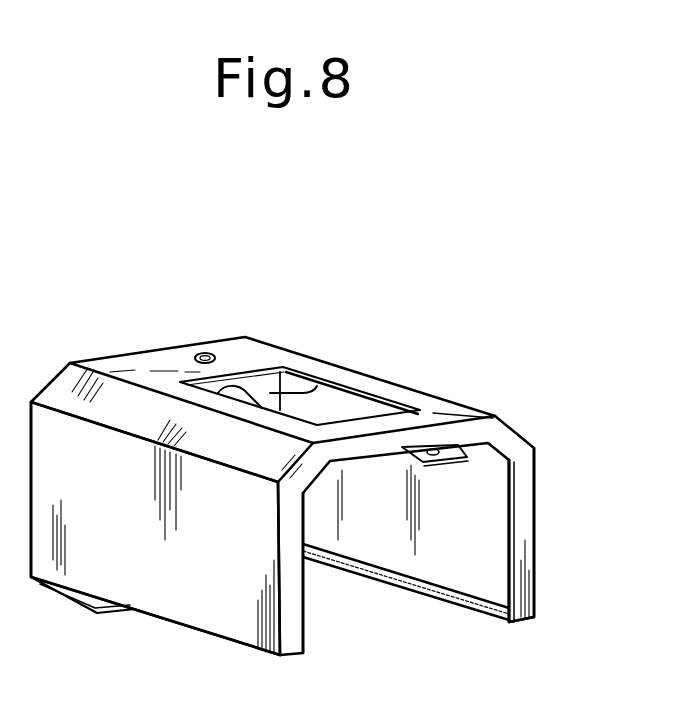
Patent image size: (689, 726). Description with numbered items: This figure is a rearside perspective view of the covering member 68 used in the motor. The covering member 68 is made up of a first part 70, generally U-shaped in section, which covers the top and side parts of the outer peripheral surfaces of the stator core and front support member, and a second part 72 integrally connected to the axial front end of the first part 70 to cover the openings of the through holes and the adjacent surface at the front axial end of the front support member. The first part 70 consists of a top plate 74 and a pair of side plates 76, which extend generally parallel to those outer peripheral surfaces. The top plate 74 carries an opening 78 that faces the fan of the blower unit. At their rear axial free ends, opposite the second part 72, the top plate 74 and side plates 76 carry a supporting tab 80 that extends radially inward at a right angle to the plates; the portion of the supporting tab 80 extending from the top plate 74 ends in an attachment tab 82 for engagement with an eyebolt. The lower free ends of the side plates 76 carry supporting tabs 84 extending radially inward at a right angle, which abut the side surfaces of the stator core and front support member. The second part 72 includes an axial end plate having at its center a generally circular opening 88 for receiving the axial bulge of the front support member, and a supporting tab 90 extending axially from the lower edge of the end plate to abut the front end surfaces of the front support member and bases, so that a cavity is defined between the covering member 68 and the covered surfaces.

The covering member 68 is at (175, 291).
The first part 70 is at (430, 393).
The second part 72 is at (368, 395).
The top plate 74 is at (232, 347).
The side plates 76 is at (208, 602).
The opening 78 is at (428, 393).
The supporting tab 80 is at (525, 513).
The attachment tab 82 is at (450, 465).
The supporting tabs 84 is at (395, 583).
The circular opening 88 is at (244, 390).
The supporting tab 90 is at (84, 611).